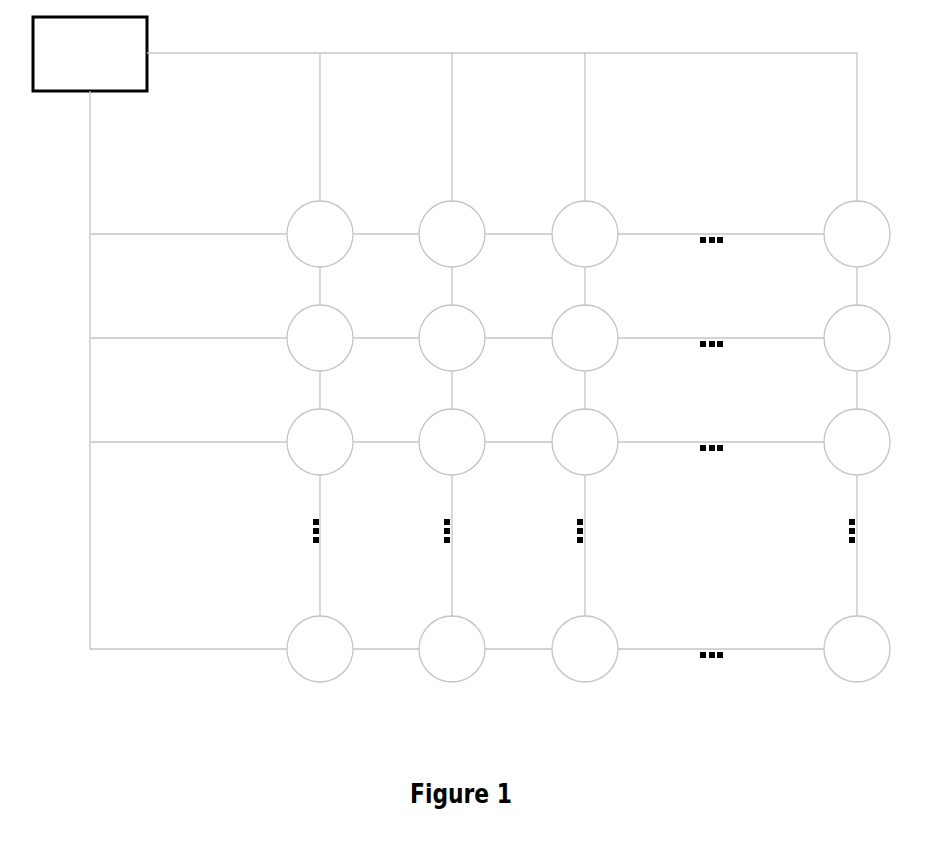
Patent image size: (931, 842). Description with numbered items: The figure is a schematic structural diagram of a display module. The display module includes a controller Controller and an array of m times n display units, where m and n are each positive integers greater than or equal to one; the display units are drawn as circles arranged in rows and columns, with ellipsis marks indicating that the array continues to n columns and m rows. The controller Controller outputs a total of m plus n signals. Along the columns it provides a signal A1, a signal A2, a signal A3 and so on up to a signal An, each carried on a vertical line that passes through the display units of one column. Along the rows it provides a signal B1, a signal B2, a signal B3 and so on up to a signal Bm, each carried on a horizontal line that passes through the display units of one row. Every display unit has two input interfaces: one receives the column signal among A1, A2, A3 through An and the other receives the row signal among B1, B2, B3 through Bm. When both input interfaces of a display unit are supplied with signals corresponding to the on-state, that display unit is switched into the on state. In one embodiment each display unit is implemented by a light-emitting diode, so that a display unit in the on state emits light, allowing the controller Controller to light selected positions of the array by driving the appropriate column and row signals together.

The controller Controller is at (90, 54).
The signal A1 is at (318, 367).
The signal A2 is at (450, 367).
The signal A3 is at (582, 367).
The signal An is at (853, 367).
The signal B1 is at (457, 247).
The signal B2 is at (457, 351).
The signal B3 is at (457, 454).
The signal Bm is at (457, 641).